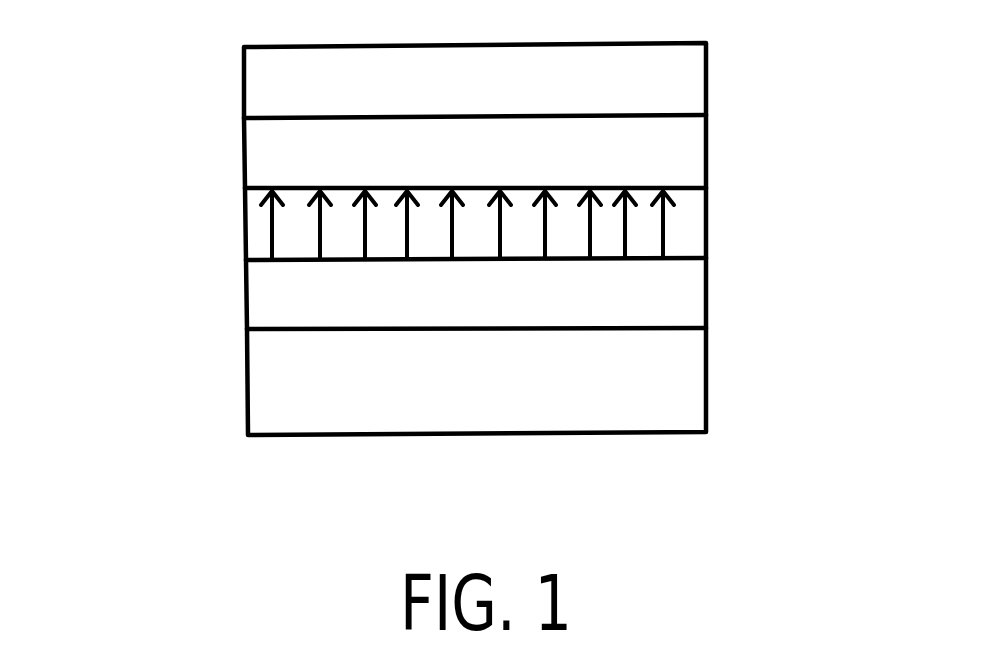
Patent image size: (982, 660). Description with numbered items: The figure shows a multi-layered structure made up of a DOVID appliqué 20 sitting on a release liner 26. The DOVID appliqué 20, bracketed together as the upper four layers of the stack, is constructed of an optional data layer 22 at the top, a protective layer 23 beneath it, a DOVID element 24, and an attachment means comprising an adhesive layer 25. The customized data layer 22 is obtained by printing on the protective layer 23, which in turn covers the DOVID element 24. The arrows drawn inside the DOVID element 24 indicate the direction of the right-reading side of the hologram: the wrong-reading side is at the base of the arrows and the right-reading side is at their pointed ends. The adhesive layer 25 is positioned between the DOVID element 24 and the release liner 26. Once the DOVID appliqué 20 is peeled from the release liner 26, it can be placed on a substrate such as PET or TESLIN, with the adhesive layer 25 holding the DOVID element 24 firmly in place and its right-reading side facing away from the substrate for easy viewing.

The DOVID appliqué 20 is at (225, 43).
The data layer 22 is at (707, 74).
The protective layer 23 is at (707, 140).
The DOVID element 24 is at (707, 211).
The adhesive layer 25 is at (707, 283).
The release liner 26 is at (707, 358).